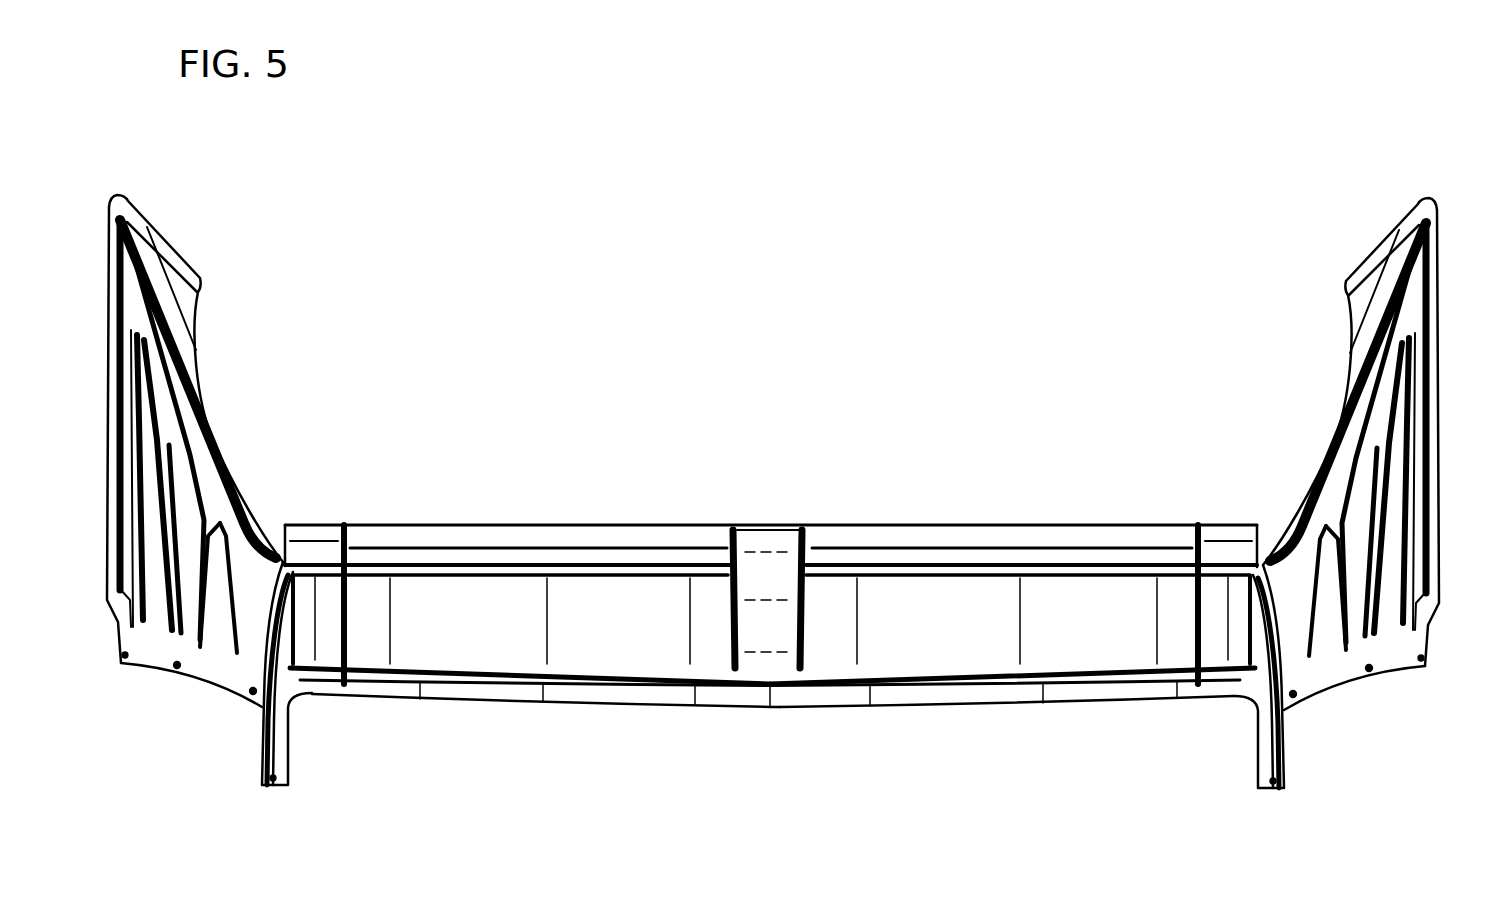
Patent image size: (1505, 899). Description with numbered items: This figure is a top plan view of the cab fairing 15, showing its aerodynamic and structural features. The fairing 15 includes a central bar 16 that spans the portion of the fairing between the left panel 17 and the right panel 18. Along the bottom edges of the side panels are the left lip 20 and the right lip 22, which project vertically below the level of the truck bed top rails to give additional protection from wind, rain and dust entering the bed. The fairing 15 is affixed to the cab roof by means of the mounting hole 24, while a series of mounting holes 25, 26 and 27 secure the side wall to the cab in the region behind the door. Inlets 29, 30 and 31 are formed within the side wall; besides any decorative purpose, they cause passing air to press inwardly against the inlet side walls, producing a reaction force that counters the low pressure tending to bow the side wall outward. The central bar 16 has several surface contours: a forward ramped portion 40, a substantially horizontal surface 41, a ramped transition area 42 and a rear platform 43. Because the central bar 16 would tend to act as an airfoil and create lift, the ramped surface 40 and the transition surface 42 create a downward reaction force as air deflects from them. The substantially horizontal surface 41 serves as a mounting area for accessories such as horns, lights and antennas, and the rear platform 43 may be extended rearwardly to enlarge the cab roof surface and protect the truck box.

The cab fairing 15 is at (937, 490).
The central bar 16 is at (771, 537).
The left panel 17 is at (1416, 208).
The right panel 18 is at (126, 204).
The left lip 20 is at (1432, 237).
The right lip 22 is at (112, 215).
The mounting hole 24 is at (275, 780).
The mounting hole 25 is at (253, 694).
The mounting hole 26 is at (177, 668).
The mounting hole 27 is at (127, 665).
The inlet 29 is at (238, 517).
The inlet 30 is at (192, 455).
The inlet 31 is at (160, 373).
The forward ramped portion 40 is at (597, 695).
The substantially horizontal surface 41 is at (913, 660).
The ramped transition area 42 is at (893, 575).
The rear platform 43 is at (538, 528).